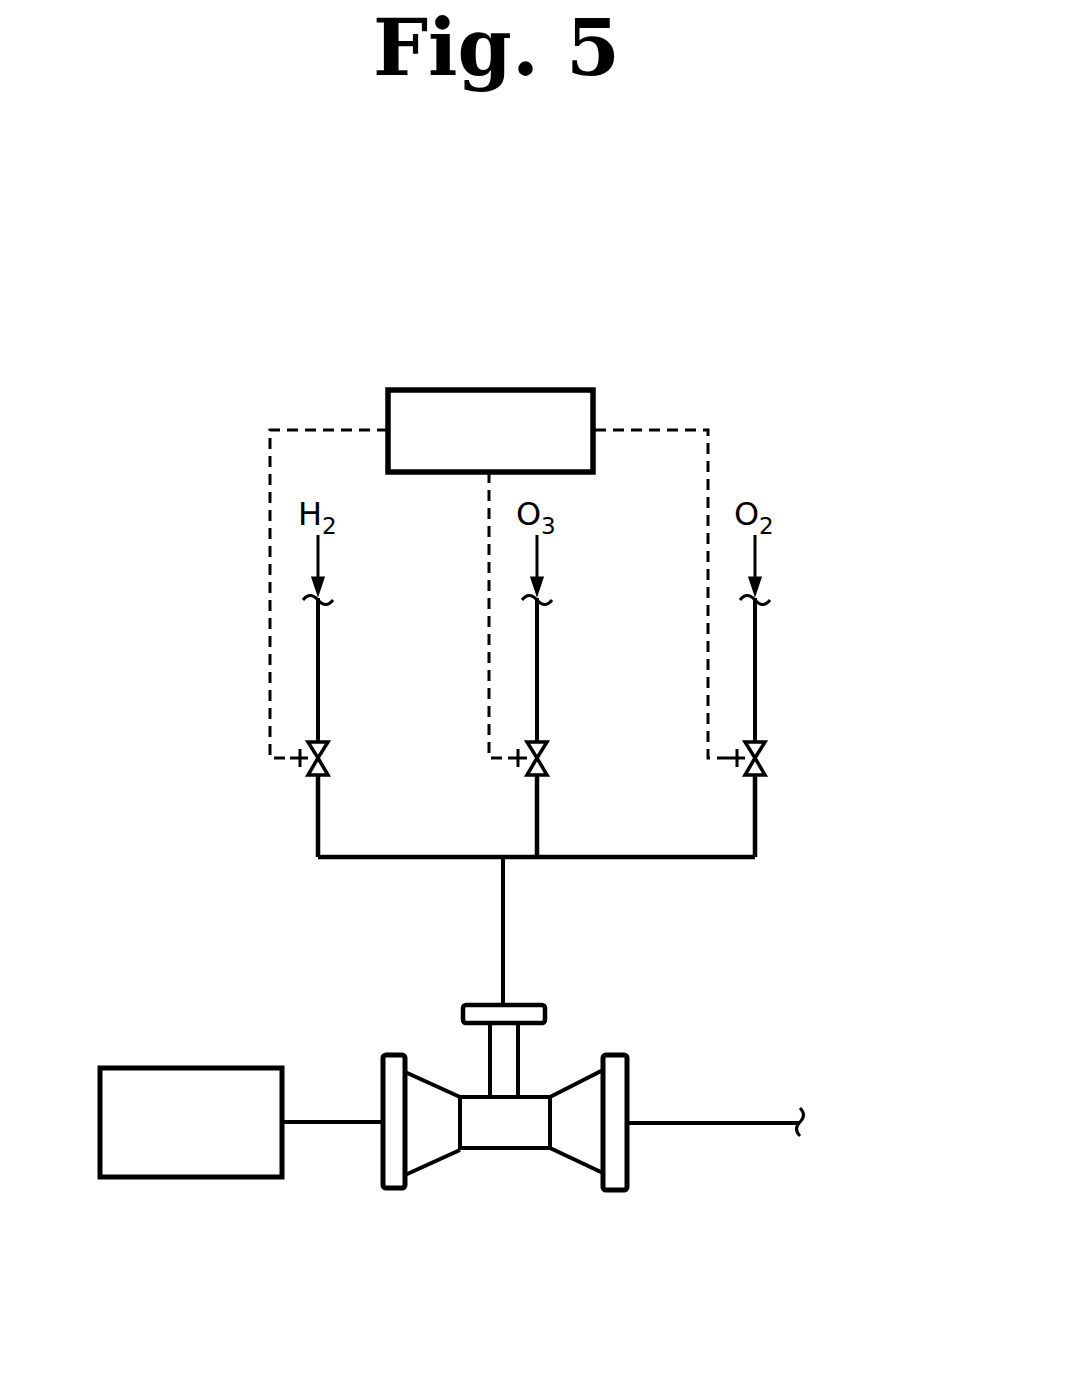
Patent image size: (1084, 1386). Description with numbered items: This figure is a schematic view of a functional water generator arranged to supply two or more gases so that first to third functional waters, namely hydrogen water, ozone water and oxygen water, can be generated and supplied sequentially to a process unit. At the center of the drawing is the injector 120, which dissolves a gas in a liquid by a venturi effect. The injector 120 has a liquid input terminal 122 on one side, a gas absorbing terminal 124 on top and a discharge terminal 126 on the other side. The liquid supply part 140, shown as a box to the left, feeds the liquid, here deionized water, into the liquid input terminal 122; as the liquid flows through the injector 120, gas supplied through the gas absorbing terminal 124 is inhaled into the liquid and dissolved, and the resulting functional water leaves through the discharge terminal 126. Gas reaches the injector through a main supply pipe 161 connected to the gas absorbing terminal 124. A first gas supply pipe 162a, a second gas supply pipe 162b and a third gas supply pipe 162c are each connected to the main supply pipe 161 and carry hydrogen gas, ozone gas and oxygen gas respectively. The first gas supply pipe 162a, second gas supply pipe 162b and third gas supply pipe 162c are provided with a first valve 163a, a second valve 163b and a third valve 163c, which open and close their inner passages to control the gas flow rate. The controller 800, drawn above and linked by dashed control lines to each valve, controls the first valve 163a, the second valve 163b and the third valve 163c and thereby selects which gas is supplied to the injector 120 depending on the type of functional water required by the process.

The controller 800 is at (537, 390).
The first gas supply pipe 162a is at (318, 700).
The second gas supply pipe 162b is at (537, 700).
The third gas supply pipe 162c is at (755, 700).
The first valve 163a is at (328, 764).
The second valve 163b is at (547, 764).
The third valve 163c is at (765, 764).
The main supply pipe 161 is at (503, 928).
The liquid supply part 140 is at (190, 1068).
The injector 120 is at (585, 1149).
The liquid input terminal 122 is at (400, 1188).
The gas absorbing terminal 124 is at (545, 1012).
The discharge terminal 126 is at (575, 1162).